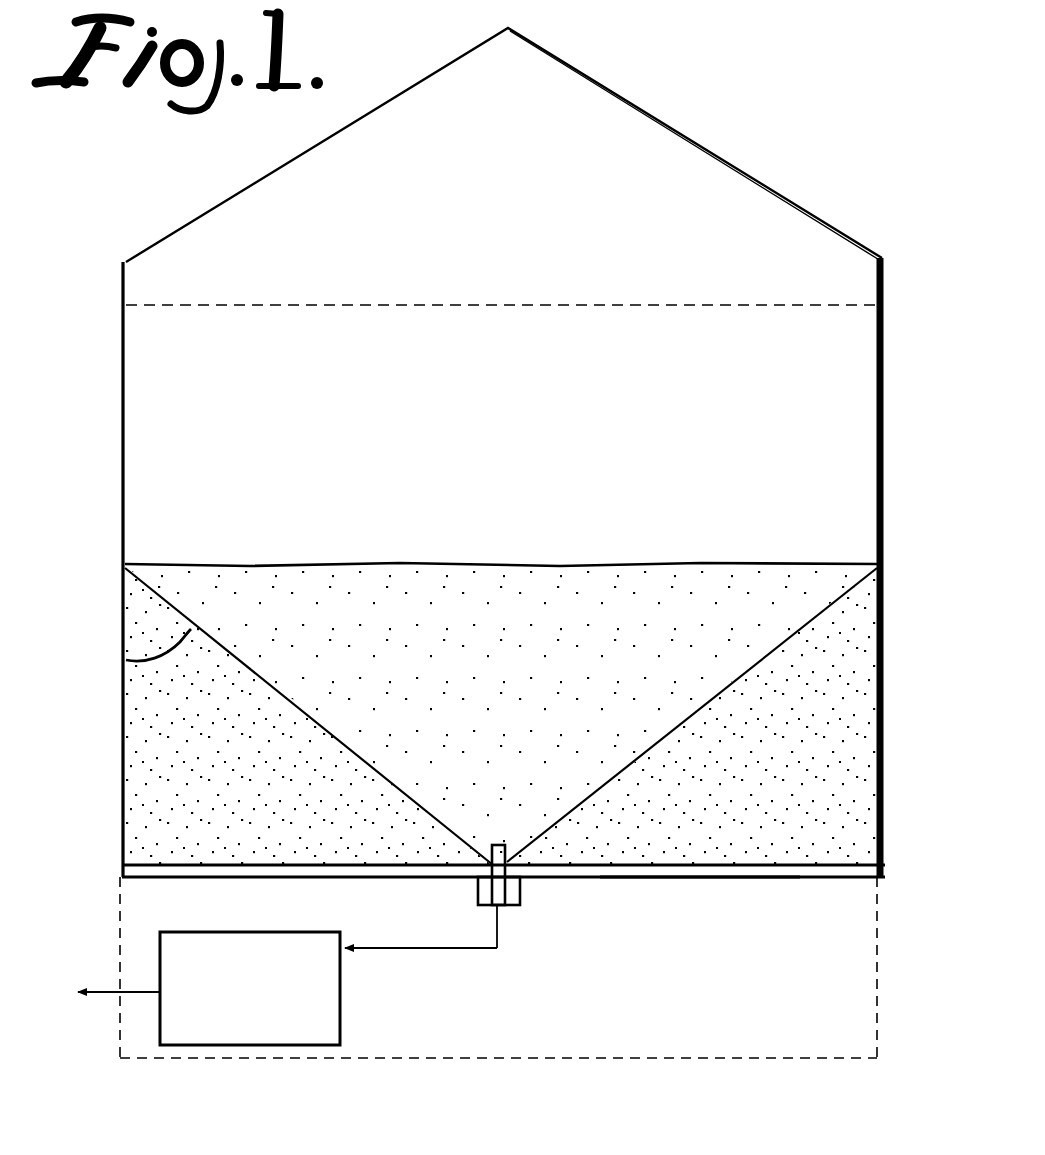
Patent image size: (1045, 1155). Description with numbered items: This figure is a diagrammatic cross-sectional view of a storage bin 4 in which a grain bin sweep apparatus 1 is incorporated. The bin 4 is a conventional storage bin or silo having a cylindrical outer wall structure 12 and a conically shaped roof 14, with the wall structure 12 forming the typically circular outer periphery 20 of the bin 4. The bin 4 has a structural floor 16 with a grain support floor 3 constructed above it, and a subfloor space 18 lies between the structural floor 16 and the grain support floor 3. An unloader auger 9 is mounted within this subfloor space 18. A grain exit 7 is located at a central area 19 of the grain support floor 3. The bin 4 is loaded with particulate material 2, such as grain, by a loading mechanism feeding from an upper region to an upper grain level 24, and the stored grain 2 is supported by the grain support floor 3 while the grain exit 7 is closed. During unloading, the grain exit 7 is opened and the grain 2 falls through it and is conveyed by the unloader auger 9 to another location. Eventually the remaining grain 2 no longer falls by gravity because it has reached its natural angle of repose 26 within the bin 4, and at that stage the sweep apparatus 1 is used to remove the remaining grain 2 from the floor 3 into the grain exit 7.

The grain bin sweep apparatus 1 is at (760, 882).
The particulate material 2 is at (835, 712).
The floor 3 is at (830, 868).
The storage bin 4 is at (885, 420).
The grain exit 7 is at (514, 860).
The unloader auger 9 is at (160, 1014).
The wall structure 12 is at (886, 474).
The roof 14 is at (665, 122).
The structural floor 16 is at (755, 1058).
The subfloor space 18 is at (412, 1000).
The central area 19 is at (443, 862).
The outer periphery 20 is at (121, 826).
The upper grain level 24 is at (810, 305).
The natural angle of repose 26 is at (112, 594).